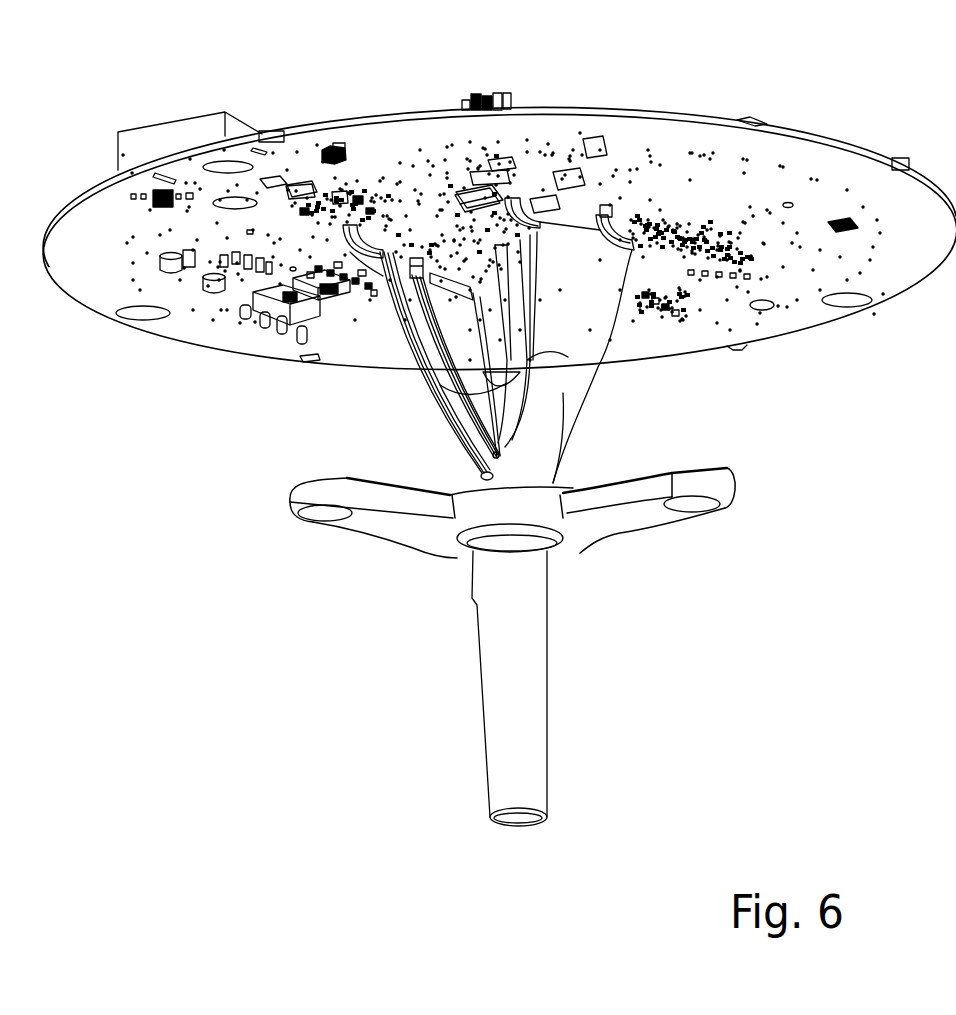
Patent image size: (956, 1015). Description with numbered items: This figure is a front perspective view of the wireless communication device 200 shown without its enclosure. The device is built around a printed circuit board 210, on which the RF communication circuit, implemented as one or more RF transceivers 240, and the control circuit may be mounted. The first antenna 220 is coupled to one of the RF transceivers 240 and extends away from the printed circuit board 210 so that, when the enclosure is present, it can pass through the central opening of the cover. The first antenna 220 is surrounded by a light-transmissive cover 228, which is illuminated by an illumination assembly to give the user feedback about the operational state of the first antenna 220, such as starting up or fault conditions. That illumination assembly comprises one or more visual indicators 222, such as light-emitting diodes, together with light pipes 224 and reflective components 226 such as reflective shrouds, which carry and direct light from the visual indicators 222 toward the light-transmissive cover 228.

The wireless communication device 200 is at (498, 460).
The printed circuit board 210 is at (104, 241).
The first antenna 220 is at (490, 394).
The visual indicators 222 is at (421, 258).
The light pipes 224 is at (450, 347).
The reflective components 226 is at (567, 300).
The light-transmissive cover 228 is at (547, 643).
The RF transceivers 240 is at (457, 200).